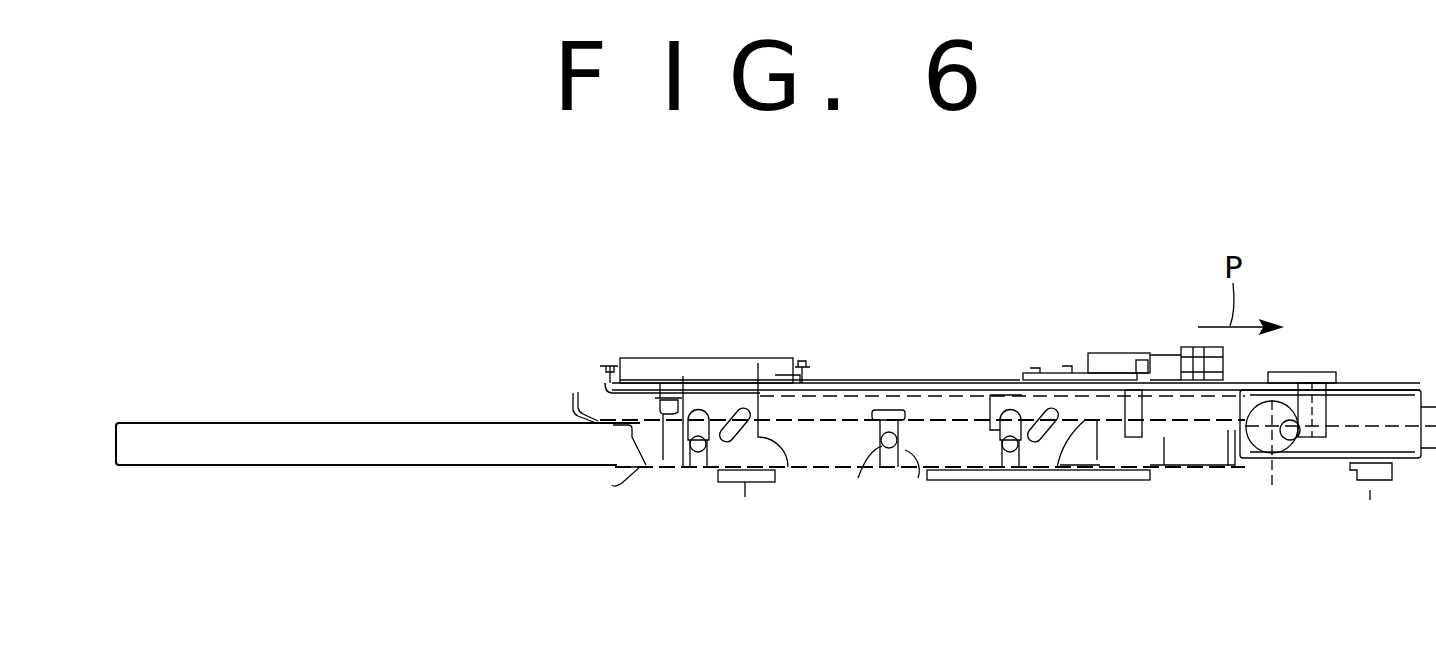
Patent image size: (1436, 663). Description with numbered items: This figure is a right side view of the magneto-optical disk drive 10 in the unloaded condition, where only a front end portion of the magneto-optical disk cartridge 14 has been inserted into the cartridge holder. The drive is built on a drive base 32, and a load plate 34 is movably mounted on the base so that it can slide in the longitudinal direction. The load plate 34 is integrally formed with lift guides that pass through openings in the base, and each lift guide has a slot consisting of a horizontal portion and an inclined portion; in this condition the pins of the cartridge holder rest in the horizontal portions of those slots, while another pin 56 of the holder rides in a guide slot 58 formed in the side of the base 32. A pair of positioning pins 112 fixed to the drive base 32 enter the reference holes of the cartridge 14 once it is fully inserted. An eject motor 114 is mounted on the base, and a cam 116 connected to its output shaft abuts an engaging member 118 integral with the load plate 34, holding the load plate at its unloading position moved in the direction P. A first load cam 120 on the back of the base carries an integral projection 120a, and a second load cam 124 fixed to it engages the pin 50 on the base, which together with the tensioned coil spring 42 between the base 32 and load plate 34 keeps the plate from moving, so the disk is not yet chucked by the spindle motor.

The magneto-optical disk drive 10 is at (854, 383).
The magneto-optical disk cartridge 14 is at (288, 423).
The drive base 32 is at (1378, 389).
The load plate 34 is at (946, 380).
The coil spring 42 is at (710, 383).
The pin 50 is at (1050, 405).
The pin 56 is at (906, 470).
The guide slot 58 is at (899, 410).
The positioning pin 112 is at (690, 405).
The eject motor 114 is at (1398, 462).
The cam 116 is at (1268, 452).
The engaging member 118 is at (1313, 387).
The first load cam 120 is at (1158, 352).
The projection 120a is at (1136, 440).
The second load cam 124 is at (1044, 372).